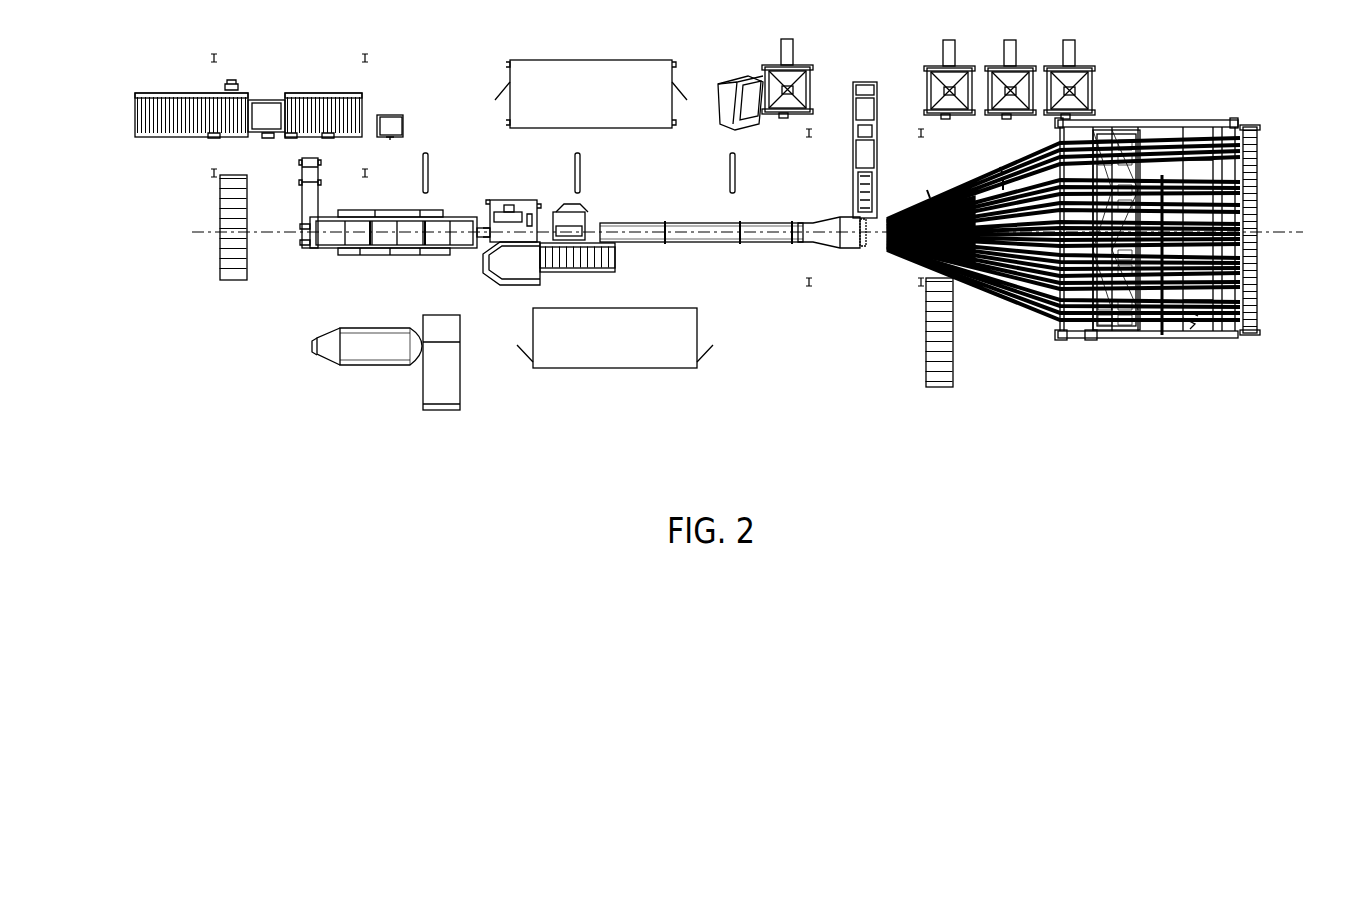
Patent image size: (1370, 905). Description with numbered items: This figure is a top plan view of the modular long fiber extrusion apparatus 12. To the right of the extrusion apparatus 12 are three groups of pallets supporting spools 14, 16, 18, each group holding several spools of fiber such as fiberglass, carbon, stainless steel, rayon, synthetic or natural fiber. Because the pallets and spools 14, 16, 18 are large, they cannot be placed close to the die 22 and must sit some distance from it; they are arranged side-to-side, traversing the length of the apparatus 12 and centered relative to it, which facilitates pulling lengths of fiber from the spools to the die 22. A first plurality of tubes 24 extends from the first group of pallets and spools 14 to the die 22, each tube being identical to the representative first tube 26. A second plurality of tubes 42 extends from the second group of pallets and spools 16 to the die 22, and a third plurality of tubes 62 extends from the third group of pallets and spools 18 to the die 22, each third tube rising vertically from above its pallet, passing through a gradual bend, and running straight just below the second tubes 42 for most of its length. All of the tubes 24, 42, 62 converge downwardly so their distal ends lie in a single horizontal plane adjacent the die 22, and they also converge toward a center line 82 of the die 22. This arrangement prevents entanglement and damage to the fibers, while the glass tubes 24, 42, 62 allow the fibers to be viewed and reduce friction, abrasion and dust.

The long fiber extrusion apparatus 12 is at (1073, 222).
The first group of pallets and spools 14 is at (1246, 344).
The second group of pallets and spools 16 is at (1135, 347).
The third group of pallets and spools 18 is at (1091, 357).
The die 22 is at (856, 262).
The first plurality of tubes 24 is at (1200, 133).
The first tube 26 is at (1201, 322).
The second plurality of tubes 42 is at (1072, 297).
The third plurality of tubes 62 is at (1026, 309).
The center line 82 is at (1300, 232).